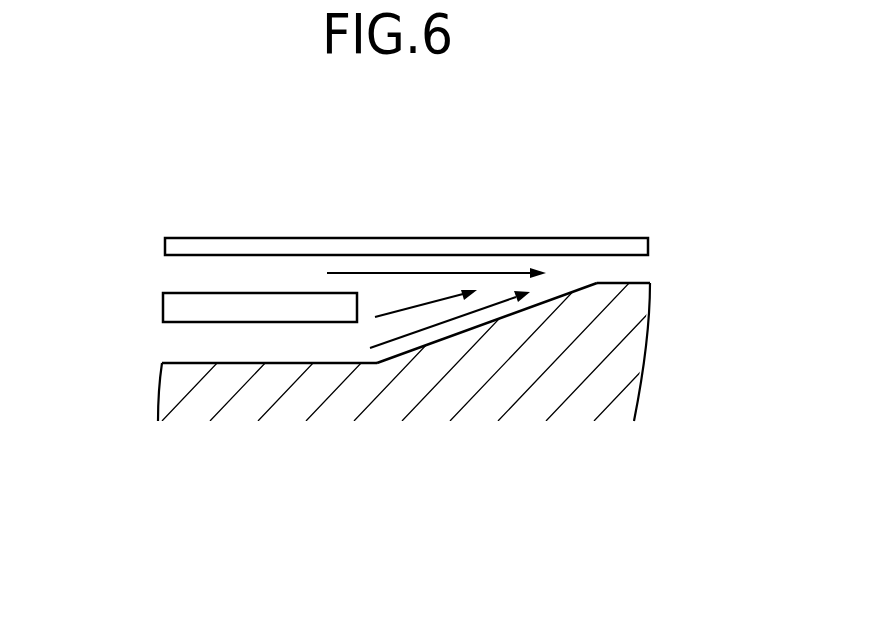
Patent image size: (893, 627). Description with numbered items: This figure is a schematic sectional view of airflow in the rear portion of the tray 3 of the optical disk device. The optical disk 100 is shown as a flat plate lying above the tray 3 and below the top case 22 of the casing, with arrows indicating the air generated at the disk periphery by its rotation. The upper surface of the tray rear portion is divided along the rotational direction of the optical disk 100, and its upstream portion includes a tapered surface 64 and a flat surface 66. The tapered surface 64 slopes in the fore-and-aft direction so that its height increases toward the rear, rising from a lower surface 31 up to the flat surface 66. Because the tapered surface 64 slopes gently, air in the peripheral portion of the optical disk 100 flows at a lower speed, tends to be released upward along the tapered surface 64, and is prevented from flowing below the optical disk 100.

The tray 3 is at (652, 350).
The top case 22 is at (403, 245).
The support surface 31 is at (197, 363).
The tapered surface 64 is at (445, 337).
The flat surface 66 is at (633, 283).
The optical disk 100 is at (220, 300).